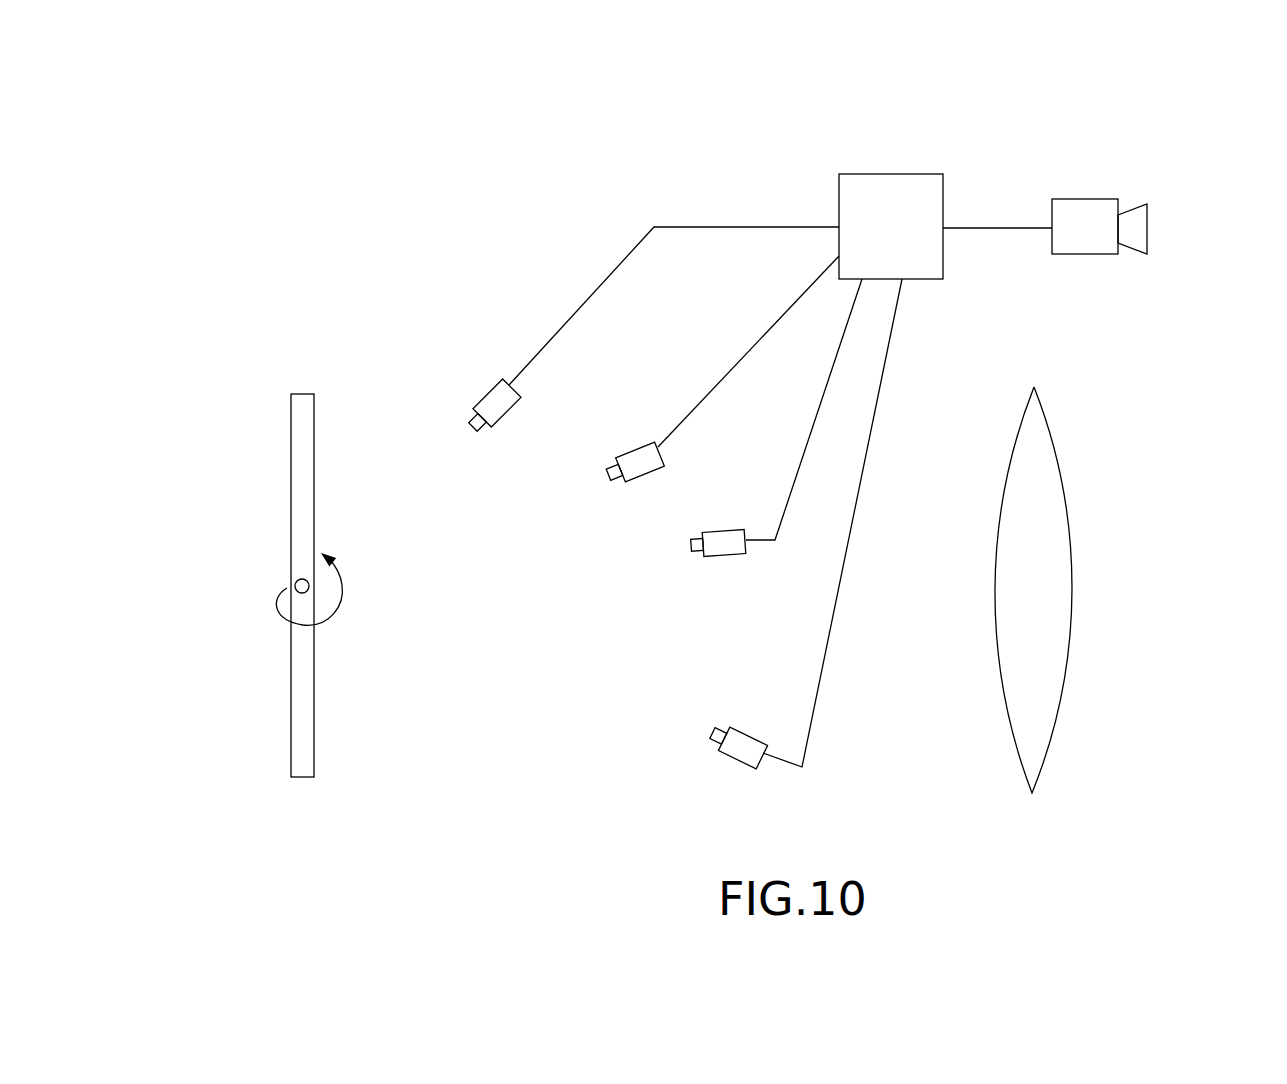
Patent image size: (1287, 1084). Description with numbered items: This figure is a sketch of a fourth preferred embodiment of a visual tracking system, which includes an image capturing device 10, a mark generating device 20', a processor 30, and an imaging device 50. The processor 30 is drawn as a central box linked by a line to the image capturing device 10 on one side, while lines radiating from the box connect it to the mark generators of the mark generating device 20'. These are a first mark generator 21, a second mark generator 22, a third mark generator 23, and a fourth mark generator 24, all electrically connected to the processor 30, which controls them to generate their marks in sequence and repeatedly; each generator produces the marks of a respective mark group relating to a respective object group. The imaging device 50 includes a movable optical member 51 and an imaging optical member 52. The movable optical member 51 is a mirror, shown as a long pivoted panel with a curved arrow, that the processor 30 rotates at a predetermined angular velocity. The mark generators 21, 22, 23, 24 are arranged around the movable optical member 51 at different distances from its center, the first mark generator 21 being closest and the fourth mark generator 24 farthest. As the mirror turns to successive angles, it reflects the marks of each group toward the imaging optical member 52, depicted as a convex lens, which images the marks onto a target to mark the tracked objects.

The mark generating device 20' is at (692, 438).
The processor 30 is at (879, 190).
The image capturing device 10 is at (1088, 213).
The first mark generator 21 is at (498, 403).
The second mark generator 22 is at (641, 462).
The third mark generator 23 is at (723, 550).
The fourth mark generator 24 is at (730, 752).
The imaging device 50 is at (245, 804).
The movable optical member 51 is at (305, 505).
The imaging optical member 52 is at (1052, 604).